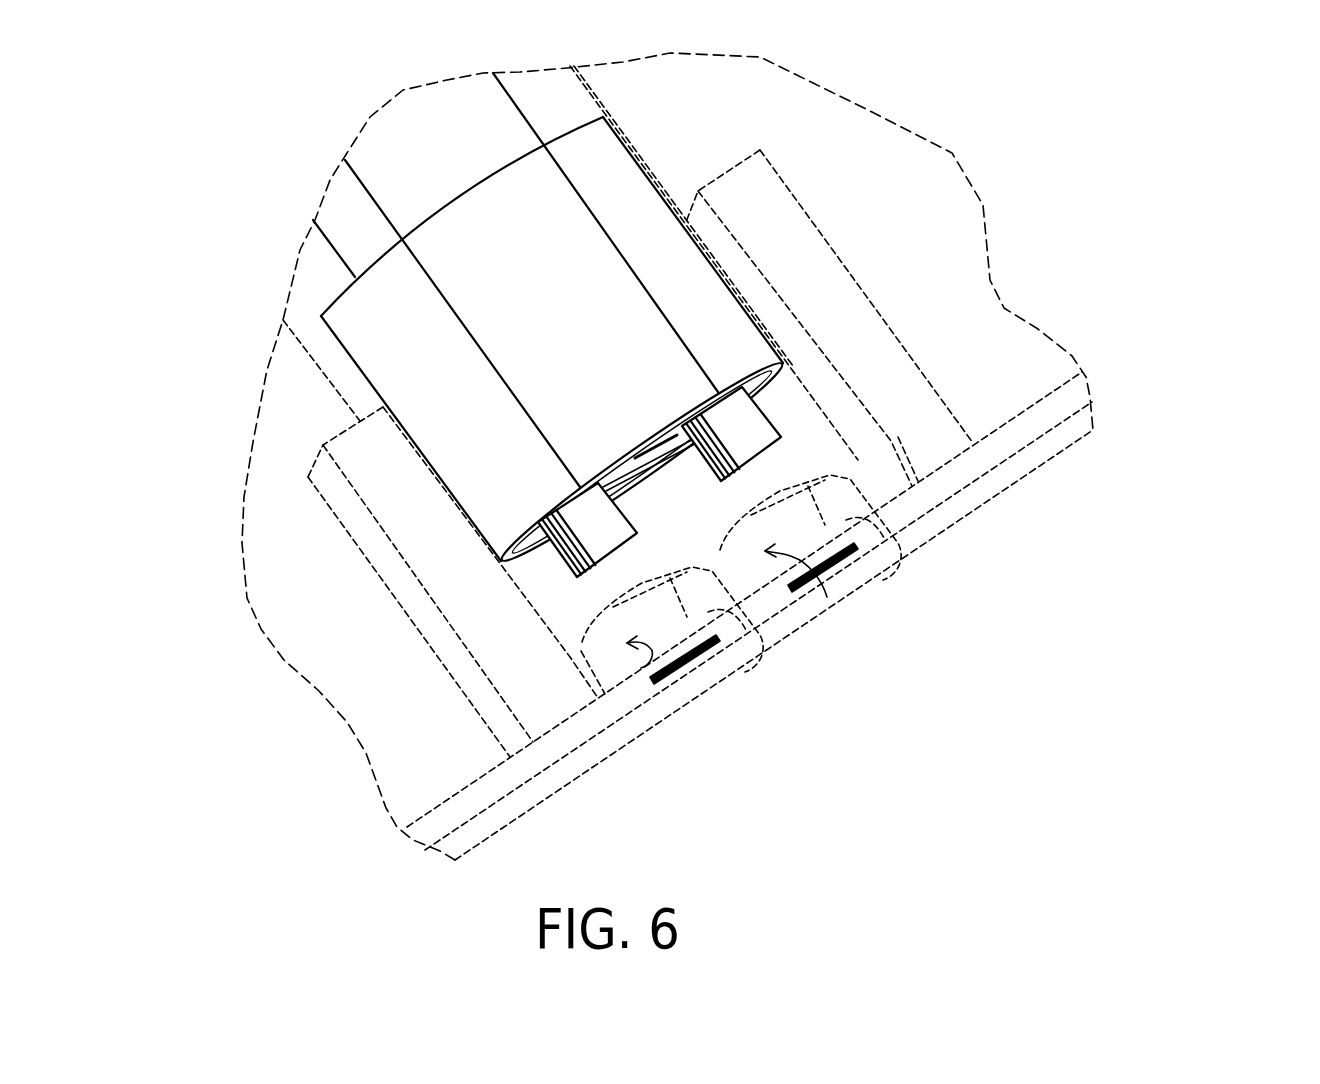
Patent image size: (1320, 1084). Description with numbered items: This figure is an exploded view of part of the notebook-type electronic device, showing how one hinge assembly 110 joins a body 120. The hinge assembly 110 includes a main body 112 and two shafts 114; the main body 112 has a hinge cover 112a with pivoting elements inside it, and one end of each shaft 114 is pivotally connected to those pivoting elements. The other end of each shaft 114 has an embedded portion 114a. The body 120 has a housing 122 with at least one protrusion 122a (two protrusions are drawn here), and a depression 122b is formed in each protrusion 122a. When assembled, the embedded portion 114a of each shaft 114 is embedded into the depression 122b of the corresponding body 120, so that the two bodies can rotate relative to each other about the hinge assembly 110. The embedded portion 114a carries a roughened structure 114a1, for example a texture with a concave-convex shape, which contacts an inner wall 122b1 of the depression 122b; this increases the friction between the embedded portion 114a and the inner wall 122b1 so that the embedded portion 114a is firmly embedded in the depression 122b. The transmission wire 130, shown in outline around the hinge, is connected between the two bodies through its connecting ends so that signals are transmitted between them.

The hinge assembly 110 is at (327, 268).
The main body 112 is at (552, 322).
The hinge cover 112a is at (477, 205).
The shaft 114 is at (666, 476).
The embedded portion 114a is at (728, 443).
The roughened structure 114a1 is at (763, 412).
The body 120 is at (1027, 473).
The housing 122 is at (533, 807).
The protrusion 122a is at (872, 586).
The depression 122b is at (845, 515).
The inner wall 122b1 is at (641, 668).
The transmission wire 130 is at (337, 193).